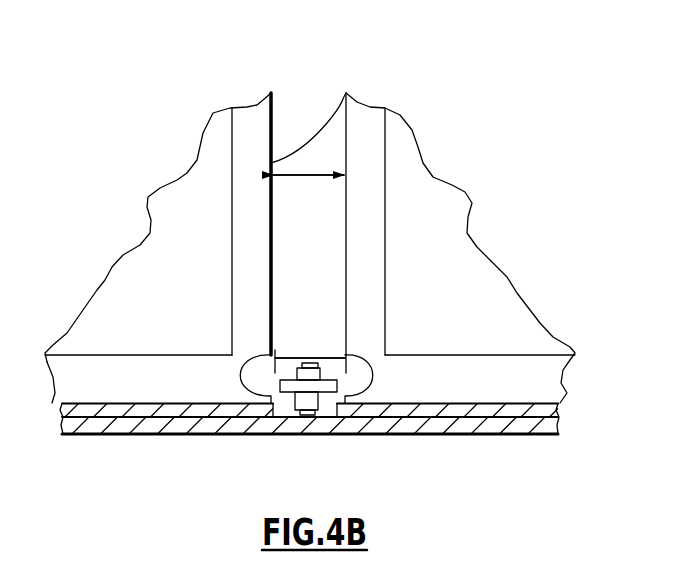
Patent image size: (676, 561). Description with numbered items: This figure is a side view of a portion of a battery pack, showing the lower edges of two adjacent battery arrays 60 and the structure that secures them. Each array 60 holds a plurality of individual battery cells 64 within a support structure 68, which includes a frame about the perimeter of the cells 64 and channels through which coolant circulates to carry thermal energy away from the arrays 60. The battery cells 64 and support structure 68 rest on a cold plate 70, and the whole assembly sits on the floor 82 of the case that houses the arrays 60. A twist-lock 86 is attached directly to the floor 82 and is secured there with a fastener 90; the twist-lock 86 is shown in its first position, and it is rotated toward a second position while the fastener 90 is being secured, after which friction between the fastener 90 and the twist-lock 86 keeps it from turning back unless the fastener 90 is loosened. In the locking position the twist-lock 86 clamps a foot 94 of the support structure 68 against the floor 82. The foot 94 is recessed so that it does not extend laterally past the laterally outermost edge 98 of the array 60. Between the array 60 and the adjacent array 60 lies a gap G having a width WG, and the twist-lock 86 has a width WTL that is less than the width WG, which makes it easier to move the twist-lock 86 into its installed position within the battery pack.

The array 60 is at (320, 166).
The battery cell 64 is at (198, 223).
The support structure 68 is at (147, 387).
The cold plate 70 is at (503, 410).
The floor 82 is at (453, 425).
The twist-lock 86 is at (292, 383).
The fastener 90 is at (312, 362).
The foot 94 is at (257, 397).
The laterally outermost edge 98 is at (271, 128).
The gap G is at (313, 103).
The width of gap WG is at (346, 97).
The width of twist-lock WTL is at (292, 360).